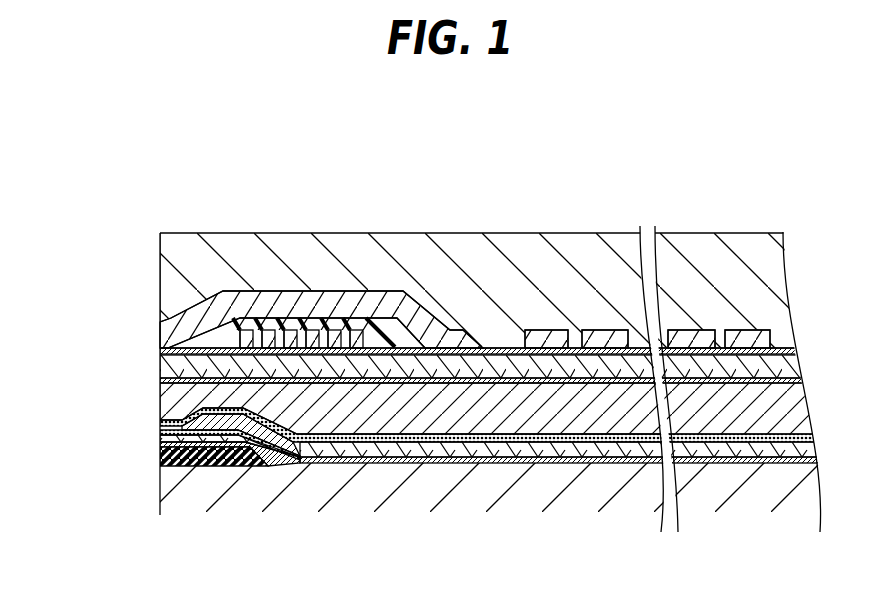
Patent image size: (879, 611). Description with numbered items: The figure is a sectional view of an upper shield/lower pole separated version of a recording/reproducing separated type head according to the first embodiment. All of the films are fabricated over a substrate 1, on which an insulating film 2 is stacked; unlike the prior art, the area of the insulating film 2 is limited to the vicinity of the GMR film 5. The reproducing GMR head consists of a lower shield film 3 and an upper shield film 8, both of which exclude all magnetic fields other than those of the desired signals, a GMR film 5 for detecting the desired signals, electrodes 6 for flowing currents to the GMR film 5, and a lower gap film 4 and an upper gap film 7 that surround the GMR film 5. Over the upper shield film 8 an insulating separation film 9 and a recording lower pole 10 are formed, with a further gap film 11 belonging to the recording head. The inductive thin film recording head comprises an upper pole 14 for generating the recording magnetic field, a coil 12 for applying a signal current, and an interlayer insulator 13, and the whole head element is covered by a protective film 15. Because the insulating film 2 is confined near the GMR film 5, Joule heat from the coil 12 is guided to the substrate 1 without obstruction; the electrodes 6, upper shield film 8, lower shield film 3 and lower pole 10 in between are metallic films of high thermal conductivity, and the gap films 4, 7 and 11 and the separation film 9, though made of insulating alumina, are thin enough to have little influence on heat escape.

The substrate 1 is at (445, 485).
The insulating film 2 is at (160, 453).
The lower shield film 3 is at (196, 402).
The lower gap film 4 is at (324, 458).
The GMR film 5 is at (160, 433).
The electrodes 6 is at (225, 418).
The upper gap film 7 is at (160, 423).
The upper shield film 8 is at (160, 403).
The insulating separation film 9 is at (160, 381).
The recording lower pole 10 is at (160, 366).
The gap film 11 is at (160, 349).
The coil 12 is at (297, 330).
The interlayer insulator 13 is at (337, 322).
The upper pole 14 is at (413, 308).
The protective film 15 is at (568, 248).